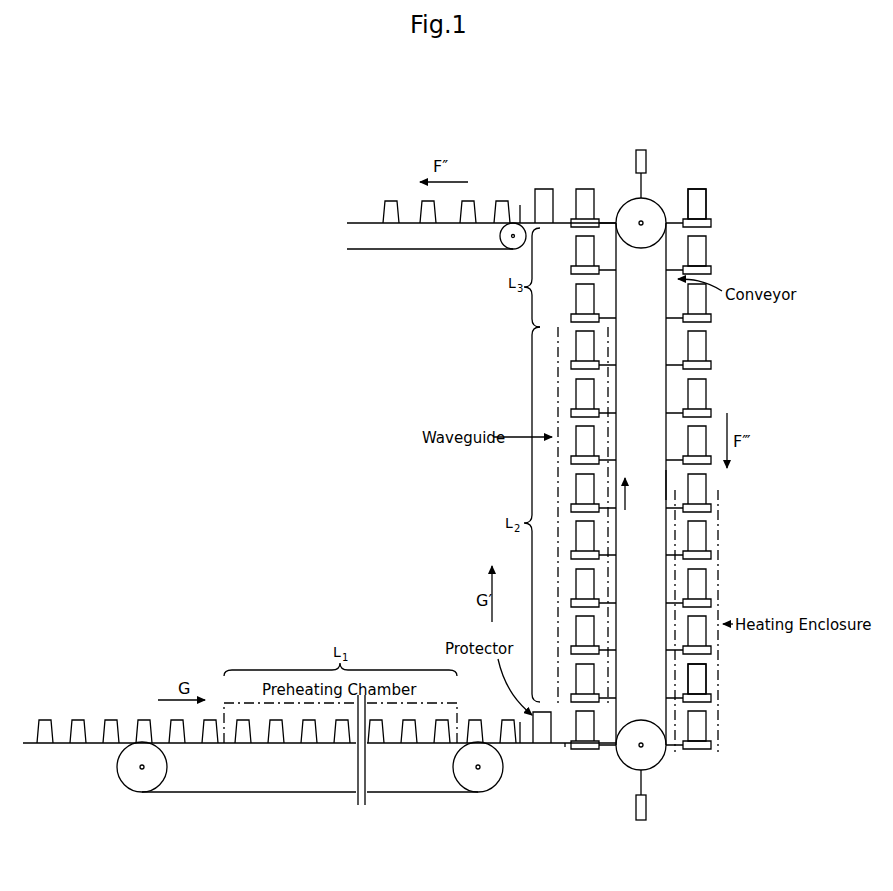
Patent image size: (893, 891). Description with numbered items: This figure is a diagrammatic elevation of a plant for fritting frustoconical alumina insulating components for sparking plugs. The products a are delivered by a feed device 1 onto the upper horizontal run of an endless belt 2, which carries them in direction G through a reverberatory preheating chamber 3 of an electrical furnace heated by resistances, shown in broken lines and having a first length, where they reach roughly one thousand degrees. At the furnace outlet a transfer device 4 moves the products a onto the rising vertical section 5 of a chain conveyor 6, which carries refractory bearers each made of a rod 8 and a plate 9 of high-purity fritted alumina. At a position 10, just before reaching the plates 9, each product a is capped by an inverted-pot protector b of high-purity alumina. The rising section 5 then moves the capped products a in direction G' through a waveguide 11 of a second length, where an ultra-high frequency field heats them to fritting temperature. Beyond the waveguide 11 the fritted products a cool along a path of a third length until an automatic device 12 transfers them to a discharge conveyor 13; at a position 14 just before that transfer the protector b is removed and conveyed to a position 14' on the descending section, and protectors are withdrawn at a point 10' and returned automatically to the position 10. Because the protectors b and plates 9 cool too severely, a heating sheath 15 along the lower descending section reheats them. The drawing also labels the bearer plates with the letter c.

The feed device 1 is at (77, 752).
The endless belt 2 is at (176, 800).
The preheating chamber 3 is at (293, 710).
The transfer device 4 is at (565, 754).
The rising vertical section 5 is at (674, 483).
The chain conveyor 6 is at (664, 212).
The rod 8 is at (636, 186).
The plate 9 is at (641, 143).
The capping position 10 is at (527, 798).
The protector withdrawal position 10' is at (734, 676).
The waveguide 11 is at (566, 395).
The automatic transfer device 12 is at (570, 213).
The discharge conveyor 13 is at (483, 218).
The protector removal position 14 is at (514, 149).
The protector return position 14' is at (734, 204).
The heating sheath 15 is at (723, 553).
The product a is at (391, 212).
The protector b is at (541, 200).
The holder base plate c is at (716, 271).